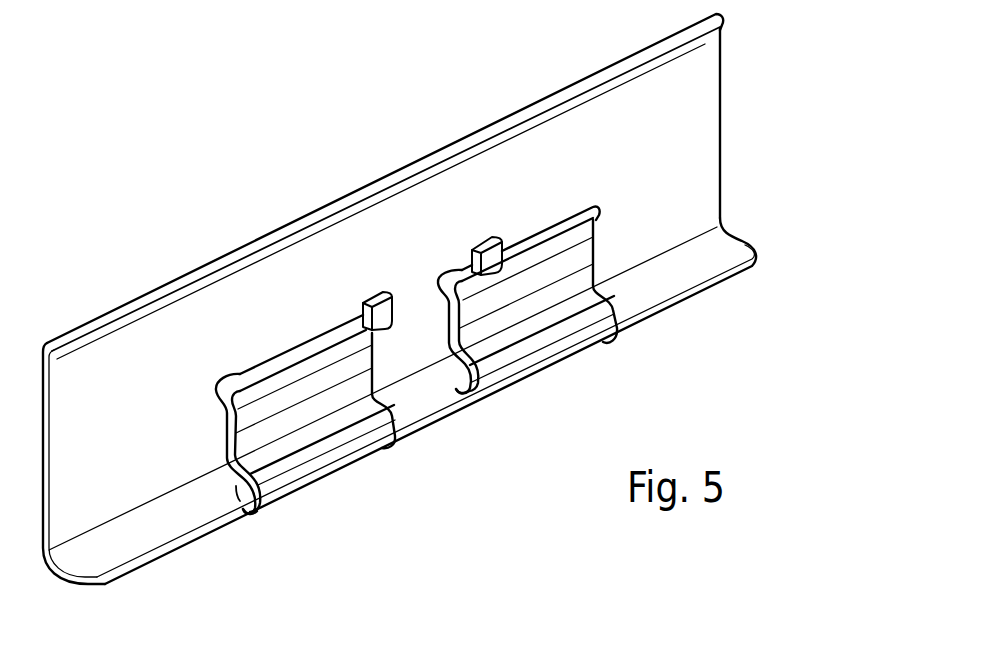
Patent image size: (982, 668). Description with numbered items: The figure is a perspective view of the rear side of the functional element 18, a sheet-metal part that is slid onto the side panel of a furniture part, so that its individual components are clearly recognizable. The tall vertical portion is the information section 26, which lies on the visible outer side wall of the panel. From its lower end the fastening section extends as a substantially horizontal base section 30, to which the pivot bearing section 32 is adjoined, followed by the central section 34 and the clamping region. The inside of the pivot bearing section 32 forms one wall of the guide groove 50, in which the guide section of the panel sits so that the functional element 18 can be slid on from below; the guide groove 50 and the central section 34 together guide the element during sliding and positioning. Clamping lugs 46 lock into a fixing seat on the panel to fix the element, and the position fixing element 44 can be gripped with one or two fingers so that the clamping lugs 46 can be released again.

The functional element 18 is at (266, 170).
The information section 26 is at (693, 144).
The base section 30 is at (667, 282).
The pivot bearing section 32 is at (364, 437).
The central section 34 is at (303, 408).
The position fixing element 44 is at (378, 291).
The clamping lug 46 is at (214, 388).
The guide groove 50 is at (236, 488).